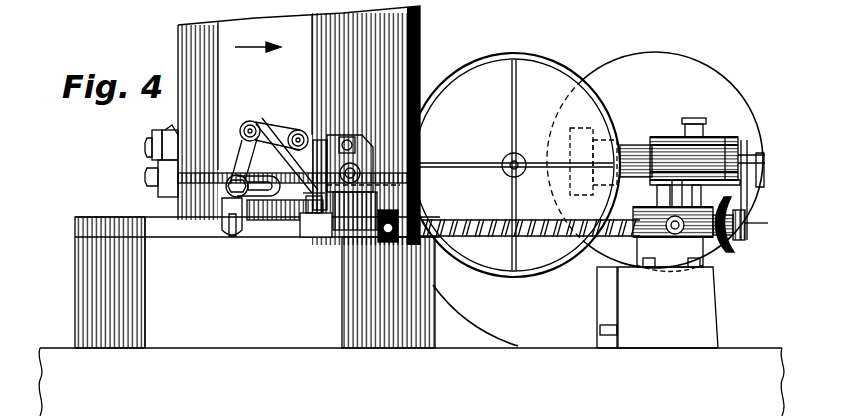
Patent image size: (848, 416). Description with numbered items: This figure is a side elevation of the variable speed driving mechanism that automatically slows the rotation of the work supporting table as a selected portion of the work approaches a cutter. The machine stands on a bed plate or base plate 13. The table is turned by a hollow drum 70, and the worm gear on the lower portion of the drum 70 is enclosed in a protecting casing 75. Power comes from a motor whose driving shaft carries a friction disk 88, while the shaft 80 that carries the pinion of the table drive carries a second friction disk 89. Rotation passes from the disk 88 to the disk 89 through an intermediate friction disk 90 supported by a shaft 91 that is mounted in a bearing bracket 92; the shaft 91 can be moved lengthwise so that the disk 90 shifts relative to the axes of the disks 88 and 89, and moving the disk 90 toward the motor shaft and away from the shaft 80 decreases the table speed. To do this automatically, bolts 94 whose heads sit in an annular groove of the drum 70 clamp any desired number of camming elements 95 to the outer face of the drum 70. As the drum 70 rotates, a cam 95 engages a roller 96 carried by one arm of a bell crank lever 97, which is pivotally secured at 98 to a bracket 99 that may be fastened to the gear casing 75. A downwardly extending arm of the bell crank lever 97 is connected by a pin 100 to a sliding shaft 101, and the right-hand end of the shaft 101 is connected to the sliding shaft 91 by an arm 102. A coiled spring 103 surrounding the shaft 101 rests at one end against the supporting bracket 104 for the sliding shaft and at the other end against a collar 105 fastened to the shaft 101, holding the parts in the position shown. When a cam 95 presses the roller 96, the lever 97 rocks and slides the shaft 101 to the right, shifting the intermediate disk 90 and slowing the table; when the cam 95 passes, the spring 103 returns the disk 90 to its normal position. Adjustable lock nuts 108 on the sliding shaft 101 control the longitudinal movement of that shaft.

The bed plate 13 is at (300, 357).
The hollow drum 70 is at (420, 22).
The protecting casing 75 is at (90, 306).
The shaft 80 is at (510, 155).
The friction disk 88 is at (722, 78).
The friction disk 89 is at (545, 60).
The intermediate friction disk 90 is at (590, 126).
The shaft 91 is at (716, 140).
The bearing bracket 92 is at (670, 135).
The bolts 94 is at (147, 178).
The camming elements 95 is at (172, 128).
The roller 96 is at (302, 128).
The bell crank lever 97 is at (270, 130).
The pivot 98 is at (243, 124).
The bracket 99 is at (278, 236).
The pin 100 is at (224, 238).
The sliding shaft 101 is at (752, 216).
The arm 102 is at (767, 145).
The coiled spring 103 is at (478, 220).
The supporting bracket 104 is at (718, 270).
The collar 105 is at (398, 242).
The adjustable lock nuts 108 is at (728, 246).